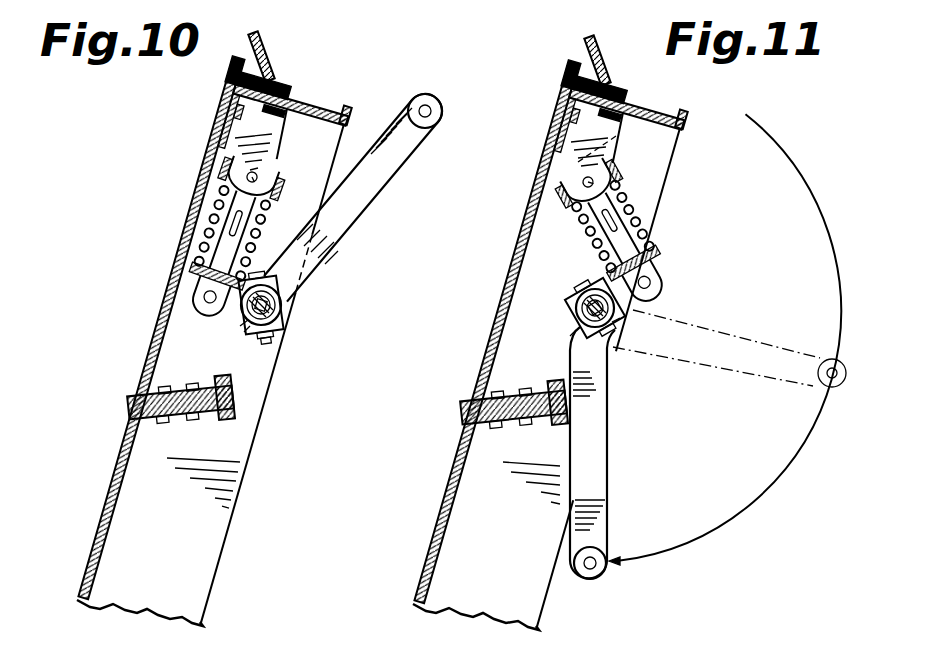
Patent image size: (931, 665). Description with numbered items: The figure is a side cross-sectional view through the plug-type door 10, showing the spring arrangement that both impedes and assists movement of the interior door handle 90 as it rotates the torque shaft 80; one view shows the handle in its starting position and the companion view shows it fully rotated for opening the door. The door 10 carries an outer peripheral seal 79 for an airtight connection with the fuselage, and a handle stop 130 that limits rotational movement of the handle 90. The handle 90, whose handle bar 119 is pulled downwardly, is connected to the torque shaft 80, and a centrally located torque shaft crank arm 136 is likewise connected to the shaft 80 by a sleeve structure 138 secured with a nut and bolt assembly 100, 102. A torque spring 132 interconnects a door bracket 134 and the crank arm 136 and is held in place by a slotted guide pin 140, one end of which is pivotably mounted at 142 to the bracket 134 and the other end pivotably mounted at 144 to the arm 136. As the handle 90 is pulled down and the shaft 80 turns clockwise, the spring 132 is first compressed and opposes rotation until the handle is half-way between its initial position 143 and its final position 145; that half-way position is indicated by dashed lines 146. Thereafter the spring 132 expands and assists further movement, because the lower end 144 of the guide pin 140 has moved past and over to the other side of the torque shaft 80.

In FIG. 10, the plug-type door 10 is at (237, 544).
In FIG. 11, the plug-type door 10 is at (414, 552).
In FIG. 10, the outer peripheral seal 79 is at (260, 58).
In FIG. 11, the outer peripheral seal 79 is at (601, 58).
In FIG. 10, the torque shaft 80 is at (290, 333).
In FIG. 11, the torque shaft 80 is at (588, 355).
In FIG. 10, the interior door handle 90 is at (377, 172).
In FIG. 11, the interior door handle 90 is at (608, 483).
In FIG. 10, the nut and bolt assembly 100 is at (280, 338).
In FIG. 11, the nut and bolt assembly 100 is at (575, 276).
In FIG. 10, the nut and bolt assembly 102 is at (283, 311).
In FIG. 11, the nut and bolt assembly 102 is at (575, 312).
In FIG. 10, the handle bar 119 is at (425, 108).
In FIG. 11, the handle bar 119 is at (589, 570).
In FIG. 10, the handle stop 130 is at (238, 400).
In FIG. 11, the handle stop 130 is at (512, 432).
In FIG. 10, the torque spring 132 is at (212, 212).
In FIG. 11, the torque spring 132 is at (626, 205).
In FIG. 10, the door bracket 134 is at (252, 137).
In FIG. 11, the door bracket 134 is at (603, 128).
In FIG. 10, the torque shaft crank arm 136 is at (247, 322).
In FIG. 11, the torque shaft crank arm 136 is at (618, 320).
In FIG. 10, the sleeve structure 138 is at (247, 323).
In FIG. 11, the sleeve structure 138 is at (573, 333).
In FIG. 10, the slotted guide pin 140 is at (228, 243).
In FIG. 11, the slotted guide pin 140 is at (650, 230).
In FIG. 10, the pivot mounting 142 is at (252, 176).
In FIG. 11, the pivot mounting 142 is at (593, 182).
In FIG. 10, the initial handle position 143 is at (455, 100).
In FIG. 10, the pivot mounting 144 is at (205, 302).
In FIG. 11, the pivot mounting 144 is at (658, 280).
In FIG. 11, the final handle position 145 is at (614, 588).
In FIG. 11, the half-way position dashed lines 146 is at (733, 320).